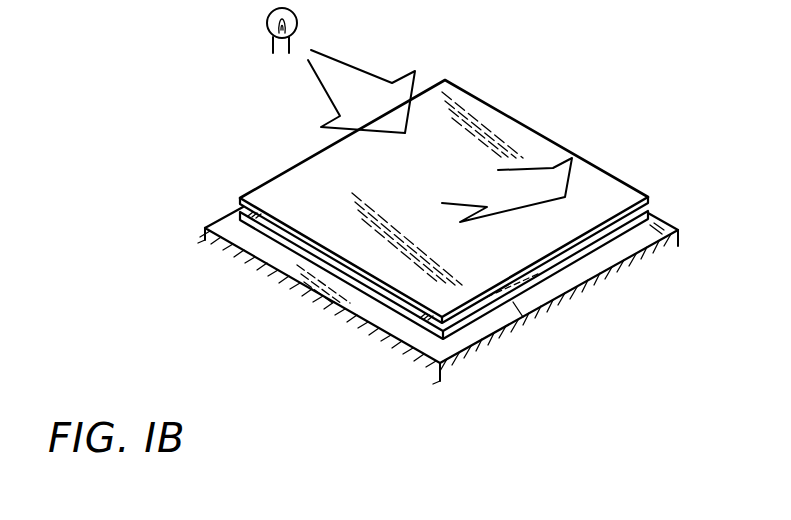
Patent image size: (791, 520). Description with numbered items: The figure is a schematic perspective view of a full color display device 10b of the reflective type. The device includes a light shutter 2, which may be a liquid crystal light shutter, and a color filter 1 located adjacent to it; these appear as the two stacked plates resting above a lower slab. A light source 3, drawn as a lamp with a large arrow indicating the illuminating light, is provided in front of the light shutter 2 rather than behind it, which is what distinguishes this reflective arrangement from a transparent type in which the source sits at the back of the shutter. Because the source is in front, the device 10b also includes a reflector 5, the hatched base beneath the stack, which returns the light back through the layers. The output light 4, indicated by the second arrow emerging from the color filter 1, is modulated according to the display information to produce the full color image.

The color filter 1 is at (650, 196).
The light shutter 2 is at (650, 212).
The light source 3 is at (270, 31).
The output light 4 is at (573, 159).
The reflector 5 is at (628, 267).
The full color display device 10b is at (565, 119).